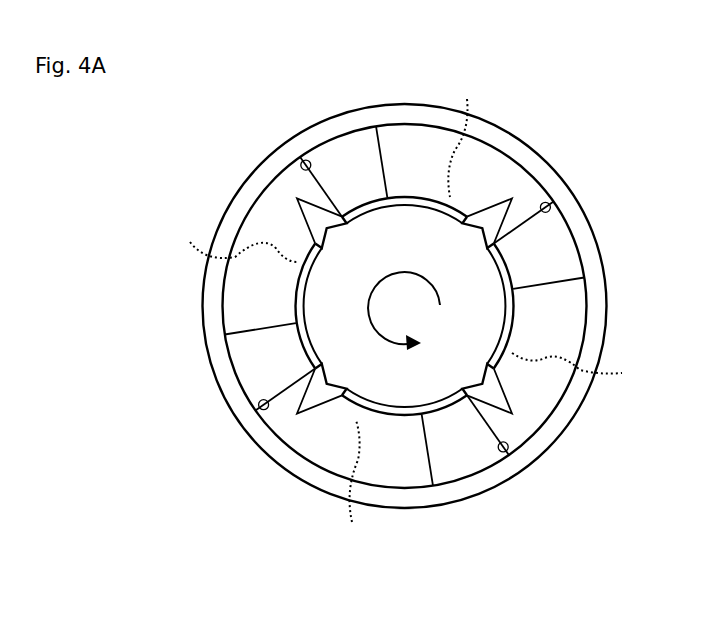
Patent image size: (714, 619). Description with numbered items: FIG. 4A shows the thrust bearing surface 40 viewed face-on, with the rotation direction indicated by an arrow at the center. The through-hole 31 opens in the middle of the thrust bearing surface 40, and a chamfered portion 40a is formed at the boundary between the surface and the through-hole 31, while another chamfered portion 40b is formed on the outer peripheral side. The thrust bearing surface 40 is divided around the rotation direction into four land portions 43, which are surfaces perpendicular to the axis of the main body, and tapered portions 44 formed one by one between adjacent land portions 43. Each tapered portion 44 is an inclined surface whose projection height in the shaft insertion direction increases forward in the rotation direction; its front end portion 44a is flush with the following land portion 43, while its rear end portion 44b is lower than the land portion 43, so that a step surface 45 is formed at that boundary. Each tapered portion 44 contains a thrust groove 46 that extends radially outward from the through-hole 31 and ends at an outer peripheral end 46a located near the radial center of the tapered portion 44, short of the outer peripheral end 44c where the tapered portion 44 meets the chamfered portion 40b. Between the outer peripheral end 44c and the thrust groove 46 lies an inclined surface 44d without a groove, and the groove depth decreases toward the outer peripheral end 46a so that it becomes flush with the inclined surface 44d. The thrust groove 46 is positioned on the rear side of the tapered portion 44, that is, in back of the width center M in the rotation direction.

The through-hole 31 is at (305, 280).
The thrust bearing surface 40 is at (203, 298).
The chamfered portion 40a is at (300, 312).
The chamfered portion 40b is at (437, 120).
The land portion 43 is at (345, 158).
The tapered portion 44 is at (545, 392).
The end portion 44a is at (389, 140).
The end portion 44b is at (302, 160).
The outer peripheral end 44c is at (302, 166).
The inclined surface 44d is at (300, 163).
The step surface 45 is at (303, 160).
The thrust groove 46 is at (305, 210).
The outer peripheral end 46a is at (297, 199).
The width center M is at (403, 312).